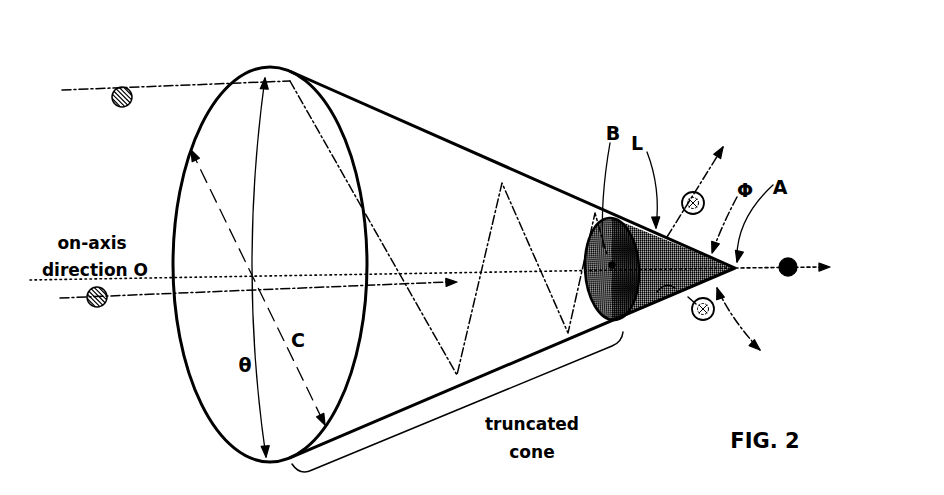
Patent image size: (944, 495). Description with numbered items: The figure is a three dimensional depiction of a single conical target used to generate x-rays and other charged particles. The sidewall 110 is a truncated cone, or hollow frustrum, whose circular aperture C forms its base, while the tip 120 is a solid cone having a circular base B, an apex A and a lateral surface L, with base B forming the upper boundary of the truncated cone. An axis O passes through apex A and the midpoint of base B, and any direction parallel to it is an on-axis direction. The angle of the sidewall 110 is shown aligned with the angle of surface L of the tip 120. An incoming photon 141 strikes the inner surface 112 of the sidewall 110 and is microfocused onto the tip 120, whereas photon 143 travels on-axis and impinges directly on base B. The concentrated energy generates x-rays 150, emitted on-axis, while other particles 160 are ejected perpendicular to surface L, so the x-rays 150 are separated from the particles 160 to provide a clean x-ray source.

The sidewall 110 is at (443, 137).
The inner surface 112 is at (238, 413).
The tip 120 is at (662, 302).
The photon 141 is at (118, 86).
The photon 143 is at (106, 306).
The x-rays 150 is at (792, 275).
The other particles 160 is at (689, 192).